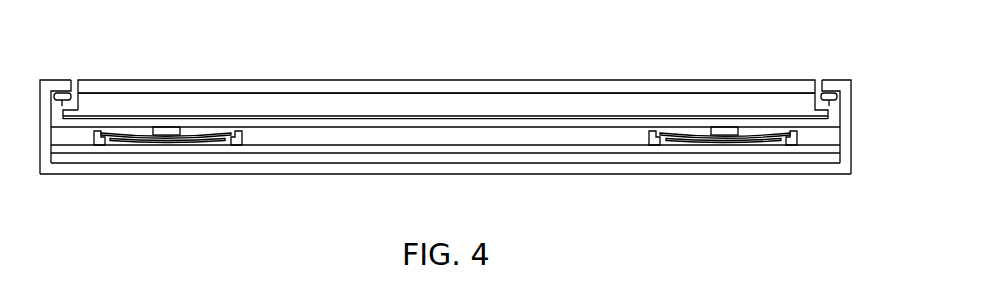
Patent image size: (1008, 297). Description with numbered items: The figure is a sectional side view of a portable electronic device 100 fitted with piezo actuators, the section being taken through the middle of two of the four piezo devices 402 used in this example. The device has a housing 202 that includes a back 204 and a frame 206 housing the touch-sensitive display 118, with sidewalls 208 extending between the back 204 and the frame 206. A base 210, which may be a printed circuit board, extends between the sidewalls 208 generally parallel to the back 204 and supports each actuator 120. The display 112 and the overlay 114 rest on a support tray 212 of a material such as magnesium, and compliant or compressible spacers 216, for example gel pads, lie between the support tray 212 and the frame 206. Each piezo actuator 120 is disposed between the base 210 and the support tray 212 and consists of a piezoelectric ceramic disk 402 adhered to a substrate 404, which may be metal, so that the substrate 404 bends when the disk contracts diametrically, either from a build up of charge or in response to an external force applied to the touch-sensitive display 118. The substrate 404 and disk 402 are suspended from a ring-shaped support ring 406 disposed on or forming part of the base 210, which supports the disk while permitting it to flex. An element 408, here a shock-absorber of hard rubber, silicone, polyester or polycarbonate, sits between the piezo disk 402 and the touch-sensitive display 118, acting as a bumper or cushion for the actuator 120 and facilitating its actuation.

The portable electronic device 100 is at (630, 46).
The display 112 is at (390, 98).
The overlay 114 is at (492, 87).
The touch-sensitive display 118 is at (322, 80).
The actuator 120 is at (163, 130).
The housing 202 is at (623, 174).
The back 204 is at (555, 170).
The frame 206 is at (53, 80).
The sidewalls 208 is at (848, 157).
The base 210 is at (472, 148).
The support tray 212 is at (405, 122).
The spacers 216 is at (825, 92).
The piezoelectric device 402 is at (168, 142).
The substrate 404 is at (105, 145).
The support ring 406 is at (235, 140).
The element 408 is at (163, 128).